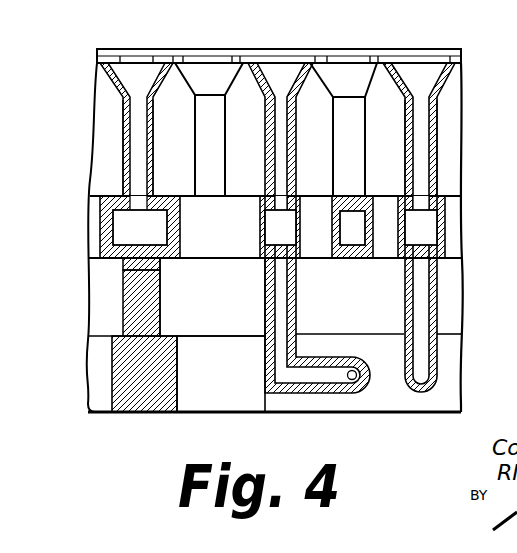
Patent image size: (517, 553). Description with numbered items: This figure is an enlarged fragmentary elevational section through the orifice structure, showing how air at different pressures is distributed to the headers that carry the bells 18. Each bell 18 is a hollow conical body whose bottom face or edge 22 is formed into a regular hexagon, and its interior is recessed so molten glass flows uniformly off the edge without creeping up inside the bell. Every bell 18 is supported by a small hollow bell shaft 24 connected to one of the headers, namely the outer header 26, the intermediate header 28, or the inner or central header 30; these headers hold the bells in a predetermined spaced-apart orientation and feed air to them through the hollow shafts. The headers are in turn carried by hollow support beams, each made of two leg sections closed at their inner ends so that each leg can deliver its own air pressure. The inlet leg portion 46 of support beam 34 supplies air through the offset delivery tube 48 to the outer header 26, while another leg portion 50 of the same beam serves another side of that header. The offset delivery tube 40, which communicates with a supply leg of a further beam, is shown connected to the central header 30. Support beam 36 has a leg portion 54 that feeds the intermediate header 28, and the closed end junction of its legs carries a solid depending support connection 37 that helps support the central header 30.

The bell 18 is at (117, 87).
The bottom face or edge 22 is at (139, 49).
The bell shaft 24 is at (128, 152).
The outer header 26 is at (440, 203).
The intermediate header 28 is at (360, 258).
The inner or central header 30 is at (100, 232).
The support beam 34 is at (338, 413).
The support beam 36 is at (145, 412).
The solid depending support connection 37 is at (125, 303).
The offset delivery tube 40 is at (297, 297).
The leg portion 46 is at (455, 363).
The offset delivery tube 48 is at (440, 303).
The leg portion 50 is at (208, 402).
The leg portion 54 is at (92, 387).